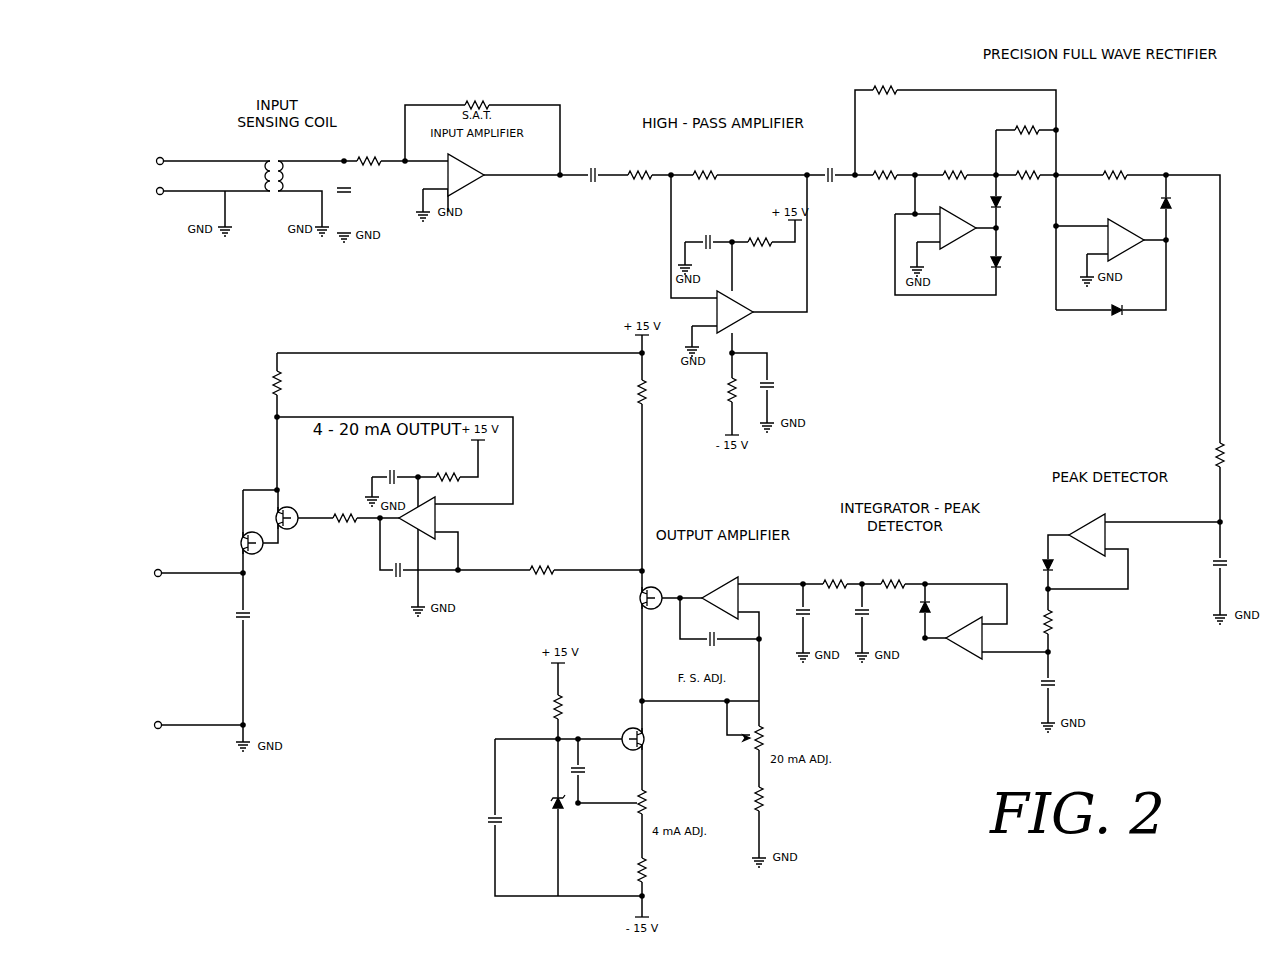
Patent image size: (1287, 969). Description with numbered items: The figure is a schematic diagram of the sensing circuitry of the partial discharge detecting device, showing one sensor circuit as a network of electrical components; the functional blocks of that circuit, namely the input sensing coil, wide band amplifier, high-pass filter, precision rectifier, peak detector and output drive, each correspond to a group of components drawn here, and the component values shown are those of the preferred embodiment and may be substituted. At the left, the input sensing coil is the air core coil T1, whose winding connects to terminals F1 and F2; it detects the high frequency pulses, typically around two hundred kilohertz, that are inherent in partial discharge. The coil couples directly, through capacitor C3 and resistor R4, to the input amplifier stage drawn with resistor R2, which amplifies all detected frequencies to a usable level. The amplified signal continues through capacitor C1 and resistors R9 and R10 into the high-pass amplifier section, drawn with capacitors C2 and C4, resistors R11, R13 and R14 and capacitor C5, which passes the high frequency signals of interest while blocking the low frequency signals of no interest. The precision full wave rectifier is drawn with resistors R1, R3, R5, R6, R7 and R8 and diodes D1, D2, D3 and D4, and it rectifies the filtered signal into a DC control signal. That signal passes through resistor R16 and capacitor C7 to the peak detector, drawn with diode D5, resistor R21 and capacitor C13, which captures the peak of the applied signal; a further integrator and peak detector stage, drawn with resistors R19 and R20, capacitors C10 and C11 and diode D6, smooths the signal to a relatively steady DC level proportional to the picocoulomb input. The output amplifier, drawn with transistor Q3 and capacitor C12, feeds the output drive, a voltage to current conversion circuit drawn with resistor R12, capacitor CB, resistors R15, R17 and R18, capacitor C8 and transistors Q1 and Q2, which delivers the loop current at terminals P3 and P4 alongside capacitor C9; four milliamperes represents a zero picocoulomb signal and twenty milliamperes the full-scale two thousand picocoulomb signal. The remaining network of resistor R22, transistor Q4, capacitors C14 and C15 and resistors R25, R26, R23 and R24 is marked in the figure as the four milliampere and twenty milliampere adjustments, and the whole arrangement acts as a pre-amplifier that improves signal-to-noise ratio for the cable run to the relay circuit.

The sensing coil input terminal F1 is at (160, 170).
The sensing coil input terminal F2 is at (160, 200).
The air core coil T1 is at (273, 168).
The capacitor C3 (TBD) C3 is at (356, 195).
The resistor R4 10K R4 is at (369, 160).
The feedback resistor R2 (S.A.T.) R2 is at (477, 97).
The capacitor C1 0.1uF C1 is at (593, 174).
The resistor R9 2K R9 is at (640, 174).
The resistor R10 10K R10 is at (705, 175).
The capacitor C2 0.1uF C2 is at (830, 174).
The capacitor C4 1uF C4 is at (708, 241).
The resistor R11 100K R11 is at (760, 241).
The resistor R14 100K R14 is at (713, 390).
The capacitor C5 1uF C5 is at (781, 381).
The resistor R13 1K R13 is at (626, 393).
The resistor R1 10K R1 is at (888, 88).
The resistor R3 10K R3 is at (1027, 128).
The resistor R5 10K R5 is at (885, 173).
The resistor R6 10K R6 is at (955, 173).
The resistor R7 10K R7 is at (1029, 173).
The resistor R8 10K R8 is at (1114, 173).
The diode D1 1N914 D1 is at (1017, 207).
The diode D3 (1N914 / zener) D3 is at (787, 530).
The diode D2 1N914 D2 is at (1187, 203).
The diode D4 1N914 D4 is at (1117, 312).
The resistor R16 20 R16 is at (1238, 454).
The capacitor C7 1000uF C7 is at (1248, 564).
The diode D5 1N914 D5 is at (1029, 564).
The resistor R21 100 R21 is at (1065, 624).
The capacitor C13 0.01uF C13 is at (1071, 684).
The transistor Q3 is at (639, 598).
The capacitor C12 0.1uF C12 is at (712, 640).
The resistor R19 1M R19 is at (834, 570).
The resistor R20 1000 R20 is at (893, 570).
The capacitor C10 0.1uF C10 is at (822, 610).
The capacitor C11 0.1uF C11 is at (881, 610).
The diode D6 1N914 D6 is at (946, 605).
The resistor R12 100 ohms R12 is at (247, 383).
The capacitor CB 1uF 25V CB is at (393, 464).
The resistor R15 100 R15 is at (451, 462).
The resistor R17 100K R17 is at (345, 519).
The capacitor C8 0.1uF C8 is at (398, 568).
The resistor R18 100K R18 is at (542, 570).
The transistor Q1 is at (295, 509).
The transistor Q2 MJD31 Q2 is at (231, 544).
The output terminal P3 is at (157, 581).
The output terminal P4 is at (157, 734).
The capacitor C9 0.1uF C9 is at (266, 617).
The resistor R22 10K R22 is at (543, 708).
The transistor Q4 VN10KM Q4 is at (659, 740).
The capacitor C14 0.1uF C14 is at (597, 771).
The capacitor C15 1uF C15 is at (481, 819).
The potentiometer R25 2K (4 mA adj.) R25 is at (657, 801).
The resistor R26 5.23K R26 is at (662, 869).
The potentiometer R23 500 (20 mA adj.) R23 is at (774, 740).
The resistor R24 1K R24 is at (774, 801).